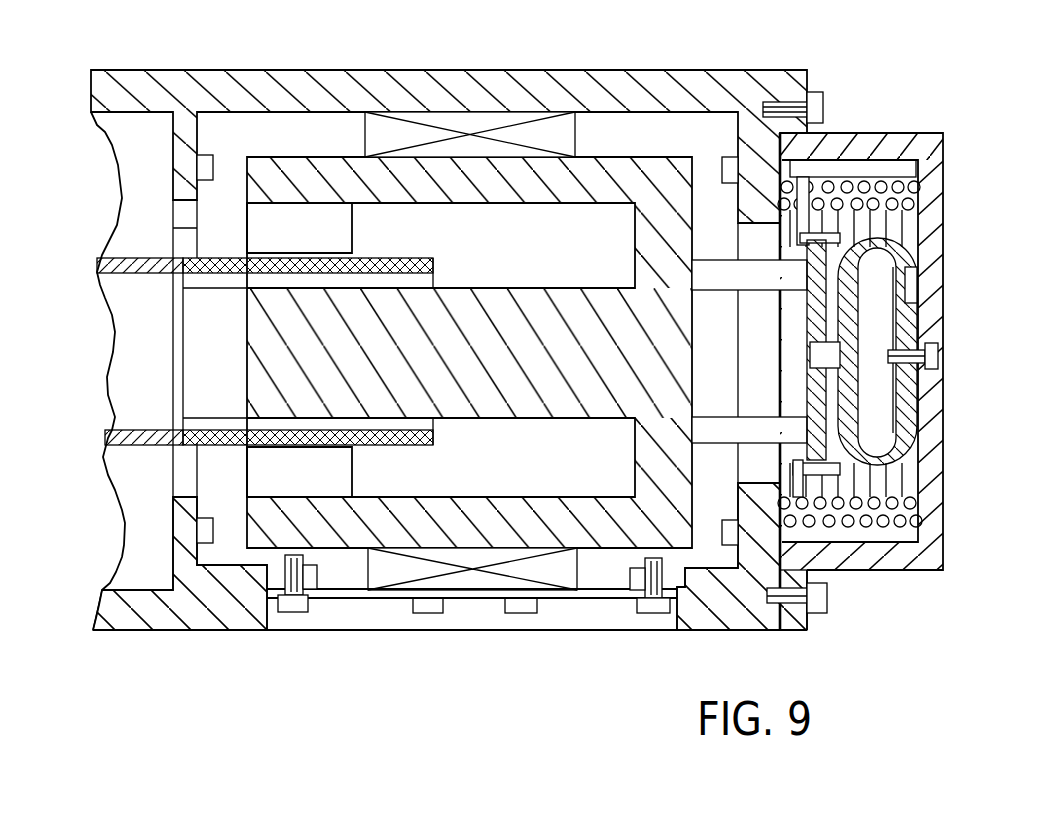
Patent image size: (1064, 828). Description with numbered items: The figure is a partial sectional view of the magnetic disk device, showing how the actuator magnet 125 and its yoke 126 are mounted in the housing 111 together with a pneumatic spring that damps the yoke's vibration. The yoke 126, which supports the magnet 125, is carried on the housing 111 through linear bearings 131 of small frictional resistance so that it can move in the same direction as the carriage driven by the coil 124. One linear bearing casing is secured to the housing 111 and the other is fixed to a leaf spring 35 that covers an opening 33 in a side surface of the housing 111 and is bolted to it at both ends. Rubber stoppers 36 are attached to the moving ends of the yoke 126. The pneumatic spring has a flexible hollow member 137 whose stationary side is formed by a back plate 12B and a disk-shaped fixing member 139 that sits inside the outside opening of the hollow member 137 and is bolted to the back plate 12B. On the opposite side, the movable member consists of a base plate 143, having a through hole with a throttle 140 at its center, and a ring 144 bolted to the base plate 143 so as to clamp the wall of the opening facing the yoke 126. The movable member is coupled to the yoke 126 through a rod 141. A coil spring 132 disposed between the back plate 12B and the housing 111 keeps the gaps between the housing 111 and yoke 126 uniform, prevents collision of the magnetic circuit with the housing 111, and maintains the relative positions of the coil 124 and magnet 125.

The housing 111 is at (424, 88).
The linear bearings 131 is at (513, 110).
The yoke 126 is at (655, 165).
The magnet 125 is at (315, 223).
The coil 124 is at (217, 257).
The rod 141 is at (700, 272).
The coil spring 132 is at (900, 170).
The back plate 12B is at (943, 220).
The ring 144 is at (865, 212).
The hollow member 137 is at (900, 458).
The fixing member 139 is at (905, 393).
The base plate 143 is at (840, 318).
The throttle 140 is at (860, 347).
The stoppers 36 is at (212, 533).
The opening 33 is at (362, 622).
The leaf spring 35 is at (603, 612).